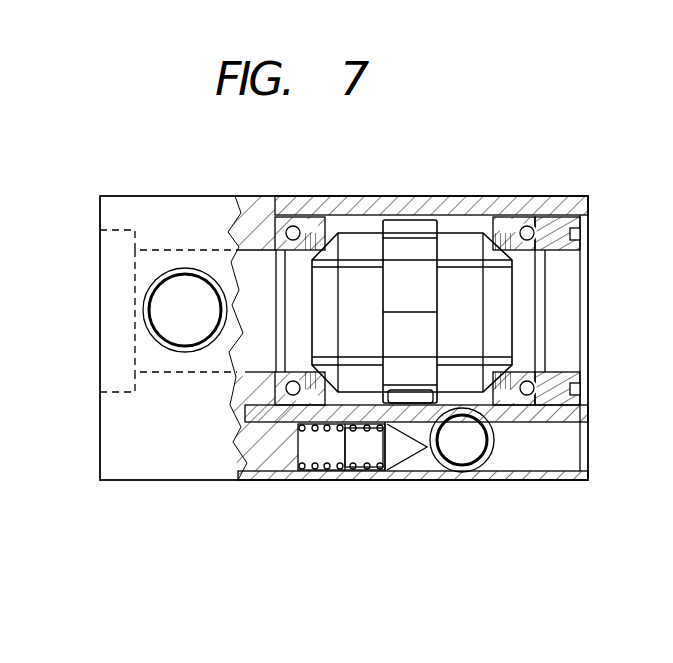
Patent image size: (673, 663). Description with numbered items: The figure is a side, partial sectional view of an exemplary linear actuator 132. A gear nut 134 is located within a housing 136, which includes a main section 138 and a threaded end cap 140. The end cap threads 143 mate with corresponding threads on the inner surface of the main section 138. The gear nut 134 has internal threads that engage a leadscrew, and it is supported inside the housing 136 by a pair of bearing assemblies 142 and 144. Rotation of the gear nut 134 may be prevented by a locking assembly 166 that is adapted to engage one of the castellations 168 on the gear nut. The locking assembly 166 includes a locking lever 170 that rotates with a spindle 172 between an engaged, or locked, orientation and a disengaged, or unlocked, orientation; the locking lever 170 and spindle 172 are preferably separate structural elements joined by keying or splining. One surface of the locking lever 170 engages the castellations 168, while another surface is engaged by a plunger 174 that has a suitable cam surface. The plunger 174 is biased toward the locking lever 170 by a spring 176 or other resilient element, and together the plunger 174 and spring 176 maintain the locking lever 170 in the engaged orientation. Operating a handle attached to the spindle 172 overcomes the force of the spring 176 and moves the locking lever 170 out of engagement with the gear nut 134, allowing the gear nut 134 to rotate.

The linear actuator 132 is at (50, 220).
The gear nut 134 is at (455, 240).
The housing 136 is at (160, 222).
The main section 138 is at (143, 458).
The threaded end cap 140 is at (590, 246).
The bearing assembly 142 is at (293, 217).
The end cap threads 143 is at (583, 415).
The bearing assembly 144 is at (530, 226).
The locking assembly 166 is at (443, 546).
The castellations 168 is at (398, 232).
The locking lever 170 is at (385, 400).
The spindle 172 is at (435, 398).
The plunger 174 is at (367, 450).
The spring 176 is at (302, 465).